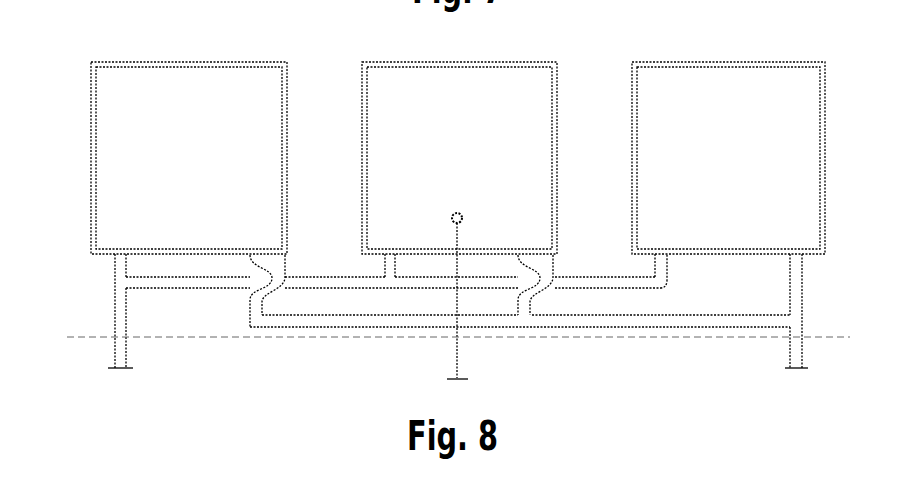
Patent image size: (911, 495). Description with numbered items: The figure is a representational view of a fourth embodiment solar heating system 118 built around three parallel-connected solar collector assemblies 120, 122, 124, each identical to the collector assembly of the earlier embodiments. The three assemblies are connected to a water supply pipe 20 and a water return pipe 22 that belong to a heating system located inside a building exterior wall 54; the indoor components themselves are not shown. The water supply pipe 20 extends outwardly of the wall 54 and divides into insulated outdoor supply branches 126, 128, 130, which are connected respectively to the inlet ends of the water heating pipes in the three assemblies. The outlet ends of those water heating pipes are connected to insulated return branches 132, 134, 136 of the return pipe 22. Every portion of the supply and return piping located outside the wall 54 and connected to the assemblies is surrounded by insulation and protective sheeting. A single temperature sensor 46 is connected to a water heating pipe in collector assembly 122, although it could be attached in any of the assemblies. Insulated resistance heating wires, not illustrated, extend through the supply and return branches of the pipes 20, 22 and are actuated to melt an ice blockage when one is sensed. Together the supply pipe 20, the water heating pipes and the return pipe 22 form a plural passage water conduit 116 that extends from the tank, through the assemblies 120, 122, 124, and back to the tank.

The fourth embodiment solar heating system 118 is at (832, 44).
The solar collector assembly 120 is at (170, 62).
The solar collector assembly 122 is at (418, 61).
The solar collector assembly 124 is at (668, 61).
The plural passage water conduit 116 is at (113, 293).
The insulated outdoor supply branch 126 is at (127, 265).
The insulated return branch 136 is at (803, 268).
The insulated outdoor supply branch 128 is at (385, 270).
The insulated outdoor supply branch 130 is at (608, 277).
The insulated return branch 132 is at (258, 258).
The insulated return branch 134 is at (530, 257).
The temperature sensor 46 is at (461, 213).
The building exterior wall 54 is at (820, 337).
The water supply pipe 20 is at (127, 357).
The water return pipe 22 is at (803, 350).